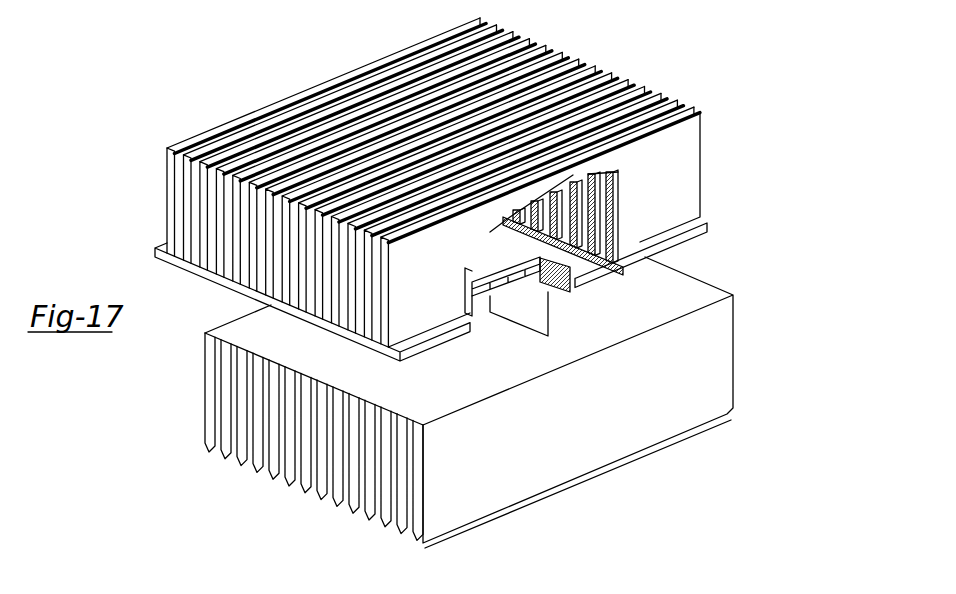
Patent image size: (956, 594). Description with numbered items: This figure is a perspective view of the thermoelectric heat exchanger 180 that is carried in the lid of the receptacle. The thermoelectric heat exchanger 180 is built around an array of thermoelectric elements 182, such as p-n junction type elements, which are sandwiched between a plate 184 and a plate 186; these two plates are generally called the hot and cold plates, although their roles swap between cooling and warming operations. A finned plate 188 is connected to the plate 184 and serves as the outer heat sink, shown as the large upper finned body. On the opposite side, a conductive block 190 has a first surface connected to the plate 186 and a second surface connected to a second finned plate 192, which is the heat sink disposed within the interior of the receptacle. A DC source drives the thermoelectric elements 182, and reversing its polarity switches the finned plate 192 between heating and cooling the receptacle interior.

The thermoelectric heat exchanger 180 is at (493, 189).
The thermoelectric elements 182 is at (631, 413).
The plate 184 is at (500, 267).
The plate 186 is at (475, 233).
The finned plate 188 is at (700, 225).
The conductive block 190 is at (523, 322).
The finned plate 192 is at (570, 458).